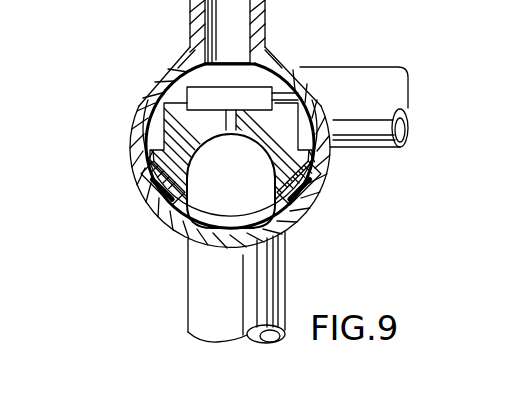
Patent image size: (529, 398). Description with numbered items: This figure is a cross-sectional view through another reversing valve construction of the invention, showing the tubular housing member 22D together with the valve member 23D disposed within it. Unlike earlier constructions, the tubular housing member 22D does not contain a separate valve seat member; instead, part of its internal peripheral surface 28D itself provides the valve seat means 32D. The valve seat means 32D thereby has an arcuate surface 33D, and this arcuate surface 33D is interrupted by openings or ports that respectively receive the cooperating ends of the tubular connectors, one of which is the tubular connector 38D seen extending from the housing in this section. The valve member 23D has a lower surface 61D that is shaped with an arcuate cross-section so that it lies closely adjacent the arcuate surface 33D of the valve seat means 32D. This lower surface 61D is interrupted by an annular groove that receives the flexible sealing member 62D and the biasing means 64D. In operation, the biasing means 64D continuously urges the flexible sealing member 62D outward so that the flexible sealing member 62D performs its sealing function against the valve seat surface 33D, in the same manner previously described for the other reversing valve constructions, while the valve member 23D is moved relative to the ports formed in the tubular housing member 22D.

The tubular housing member 22D is at (130, 120).
The valve member 23D is at (318, 90).
The internal peripheral surface 28D is at (177, 82).
The valve seat means 32D is at (150, 215).
The arcuate surface 33D is at (182, 236).
The tubular connector 38D is at (188, 305).
The lower surface 61D is at (295, 226).
The flexible sealing member 62D is at (145, 181).
The biasing means 64D is at (318, 157).